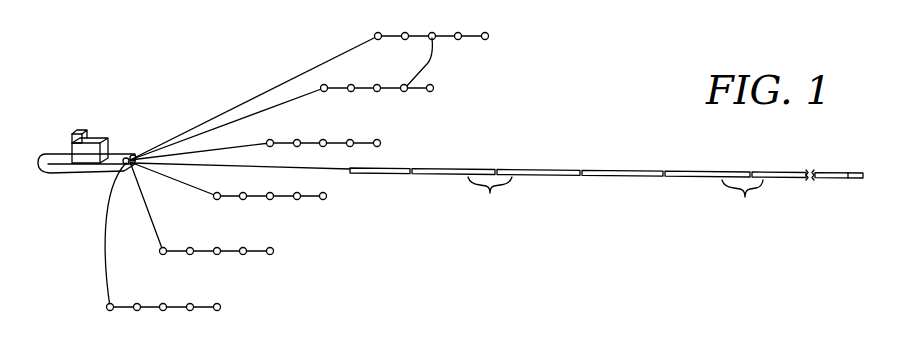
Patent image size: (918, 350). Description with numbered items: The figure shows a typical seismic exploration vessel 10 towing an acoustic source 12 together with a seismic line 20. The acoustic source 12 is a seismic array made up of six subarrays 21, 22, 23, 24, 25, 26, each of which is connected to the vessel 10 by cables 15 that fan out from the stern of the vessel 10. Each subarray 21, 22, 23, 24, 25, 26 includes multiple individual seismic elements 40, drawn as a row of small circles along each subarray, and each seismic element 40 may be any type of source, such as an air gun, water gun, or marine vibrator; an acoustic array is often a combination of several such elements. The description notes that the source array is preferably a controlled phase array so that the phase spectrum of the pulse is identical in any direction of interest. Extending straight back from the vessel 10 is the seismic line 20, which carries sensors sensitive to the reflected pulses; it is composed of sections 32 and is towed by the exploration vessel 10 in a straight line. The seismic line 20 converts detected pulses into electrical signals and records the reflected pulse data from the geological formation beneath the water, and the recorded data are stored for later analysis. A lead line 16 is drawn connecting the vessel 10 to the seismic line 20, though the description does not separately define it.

The seismic exploration vessel 10 is at (56, 154).
The acoustic source 12 is at (486, 84).
The cables 15 is at (187, 153).
The lead-in cable 16 is at (272, 171).
The seismic line 20 is at (536, 158).
The subarray 21 is at (394, 36).
The subarray 22 is at (349, 90).
The subarray 23 is at (284, 142).
The subarray 24 is at (236, 199).
The subarray 25 is at (181, 254).
The subarray 26 is at (127, 311).
The sections 32 is at (615, 200).
The seismic element 40 is at (430, 58).